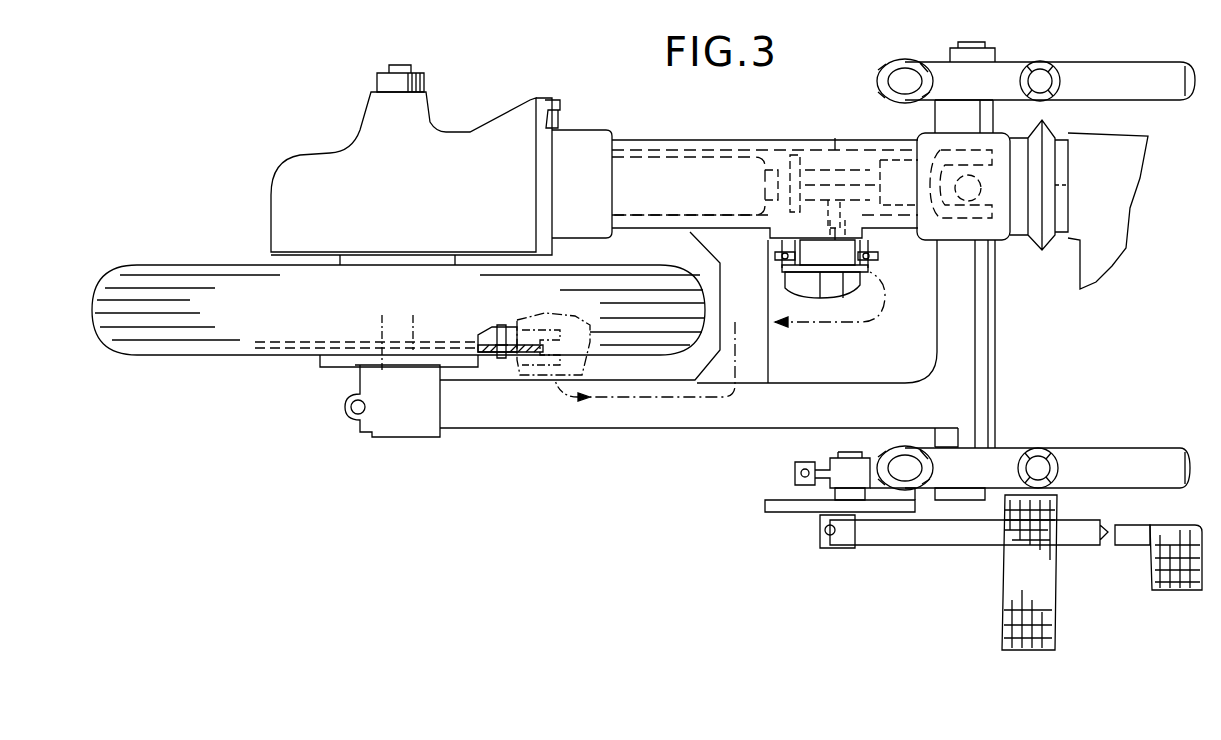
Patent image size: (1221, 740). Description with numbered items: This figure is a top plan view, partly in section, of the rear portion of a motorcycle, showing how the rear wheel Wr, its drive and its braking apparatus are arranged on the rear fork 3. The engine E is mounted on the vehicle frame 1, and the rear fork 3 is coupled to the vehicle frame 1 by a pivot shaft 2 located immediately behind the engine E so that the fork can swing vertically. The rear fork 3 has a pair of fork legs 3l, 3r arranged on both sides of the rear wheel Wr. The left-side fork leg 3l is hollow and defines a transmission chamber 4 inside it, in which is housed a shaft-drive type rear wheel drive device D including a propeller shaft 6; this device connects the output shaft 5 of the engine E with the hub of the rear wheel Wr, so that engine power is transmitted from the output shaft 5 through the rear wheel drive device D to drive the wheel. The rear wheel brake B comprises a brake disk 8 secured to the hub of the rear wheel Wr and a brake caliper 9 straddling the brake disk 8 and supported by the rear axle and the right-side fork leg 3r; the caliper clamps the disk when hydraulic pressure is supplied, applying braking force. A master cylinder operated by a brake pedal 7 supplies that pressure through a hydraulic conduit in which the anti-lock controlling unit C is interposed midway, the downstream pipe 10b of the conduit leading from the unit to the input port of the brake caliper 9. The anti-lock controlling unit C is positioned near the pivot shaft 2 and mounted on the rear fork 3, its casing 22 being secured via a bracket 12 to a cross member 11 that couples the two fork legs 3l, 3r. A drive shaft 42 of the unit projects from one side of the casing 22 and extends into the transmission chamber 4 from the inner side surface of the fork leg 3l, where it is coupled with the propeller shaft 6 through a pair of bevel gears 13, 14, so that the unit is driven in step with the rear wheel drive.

The vehicle frame 1 is at (1115, 460).
The pivot shaft 2 is at (966, 48).
The rear fork 3 is at (620, 430).
The left-side fork leg 3l is at (685, 142).
The right-side fork leg 3r is at (690, 428).
The transmission chamber 4 is at (748, 150).
The output shaft 5 is at (1065, 205).
The propeller shaft 6 is at (870, 165).
The brake pedal 7 is at (1172, 592).
The brake disk 8 is at (503, 327).
The brake caliper 9 is at (560, 322).
The downstream pipe 10b is at (735, 397).
The cross member 11 is at (762, 340).
The bracket 12 is at (782, 246).
The bevel gear 13 is at (796, 155).
The bevel gear 14 is at (868, 212).
The casing 22 is at (830, 292).
The drive shaft 42 is at (830, 228).
The rear wheel brake B is at (487, 390).
The anti-lock controlling unit C is at (895, 292).
The rear wheel drive device D is at (838, 138).
The engine E is at (1168, 158).
The rear wheel Wr is at (215, 275).